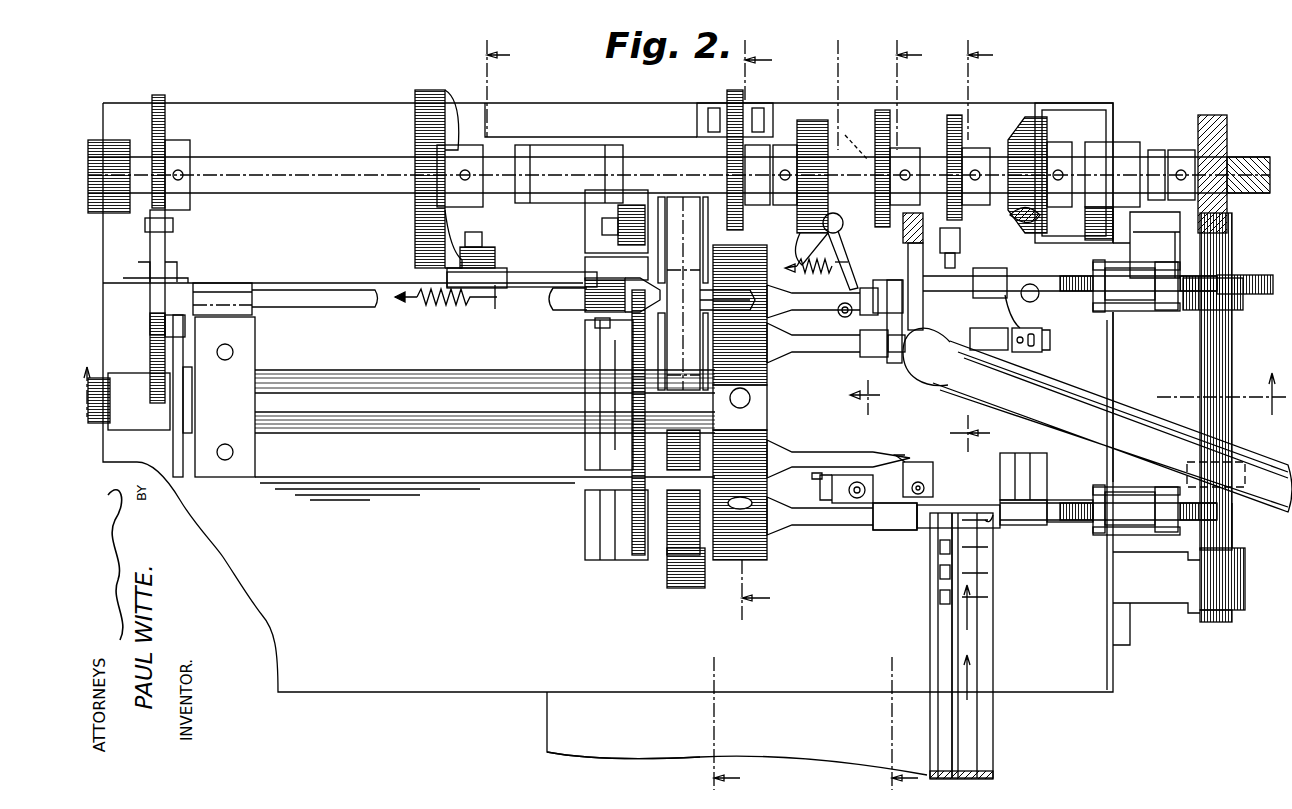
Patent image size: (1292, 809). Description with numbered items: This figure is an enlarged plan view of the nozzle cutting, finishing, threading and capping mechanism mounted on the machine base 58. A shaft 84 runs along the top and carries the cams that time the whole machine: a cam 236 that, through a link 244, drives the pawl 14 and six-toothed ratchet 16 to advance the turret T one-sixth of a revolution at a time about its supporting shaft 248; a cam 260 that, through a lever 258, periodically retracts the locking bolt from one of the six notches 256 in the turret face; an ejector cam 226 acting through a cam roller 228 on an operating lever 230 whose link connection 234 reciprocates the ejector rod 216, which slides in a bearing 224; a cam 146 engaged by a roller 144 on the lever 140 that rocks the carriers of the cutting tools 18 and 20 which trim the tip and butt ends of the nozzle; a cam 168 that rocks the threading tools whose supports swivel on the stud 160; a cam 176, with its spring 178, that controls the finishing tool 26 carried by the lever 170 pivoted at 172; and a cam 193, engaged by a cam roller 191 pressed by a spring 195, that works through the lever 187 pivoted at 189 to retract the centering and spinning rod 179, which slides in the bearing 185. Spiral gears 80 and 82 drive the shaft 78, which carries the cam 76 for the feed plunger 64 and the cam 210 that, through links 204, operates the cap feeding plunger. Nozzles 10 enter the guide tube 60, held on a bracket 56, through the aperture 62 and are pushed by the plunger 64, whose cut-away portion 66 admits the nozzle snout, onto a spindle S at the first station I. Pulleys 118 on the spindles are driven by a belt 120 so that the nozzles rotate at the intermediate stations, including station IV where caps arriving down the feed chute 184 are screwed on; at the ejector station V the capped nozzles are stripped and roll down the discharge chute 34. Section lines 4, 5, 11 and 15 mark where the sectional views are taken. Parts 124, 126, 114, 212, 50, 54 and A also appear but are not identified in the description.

The machine base 58 is at (651, 439).
The shaft 84 is at (292, 157).
The cam 236 is at (158, 95).
The ejector cam 226 is at (420, 92).
The cam 260 is at (735, 160).
The lever 258 is at (727, 90).
The cam 176 is at (812, 120).
The cam 146 is at (882, 110).
The roller 144 is at (859, 136).
The cam 168 is at (952, 115).
The feed chute 184 is at (930, 213).
The cam 193 is at (1018, 125).
The spiral gear 82 is at (1208, 115).
The spiral gear 80 is at (1245, 157).
The link 244 is at (163, 240).
The bearing 224 is at (222, 283).
The reciprocating rod 216 is at (320, 307).
The operating lever 230 is at (478, 300).
The cam roller 228 is at (495, 255).
The link connection 234 is at (555, 266).
The pawl 14 is at (150, 345).
The ratchet 16 is at (172, 430).
The shaft 248 is at (400, 433).
The flange 124 is at (668, 215).
The gear 126 is at (676, 357).
The pulleys 118 is at (700, 520).
The turret T is at (768, 396).
The notches 256 is at (730, 398).
The belt 120 is at (690, 588).
The ejector station V is at (812, 345).
The first operating station I is at (830, 478).
The spindles S is at (852, 535).
The cutting tool 18 is at (933, 478).
The cutting tool 20 is at (832, 485).
The cut-away portion 66 is at (897, 530).
The spring 178 is at (800, 262).
The knob 114 is at (851, 217).
The lever 140 is at (850, 258).
The station IV is at (840, 280).
The lever 170 is at (840, 263).
The pivot 172 is at (838, 310).
The bracket 212 is at (895, 363).
The nozzle 10 is at (925, 380).
The discharge chute 34 is at (1112, 426).
The centering and spinning rod 179 is at (990, 350).
The bearing 185 is at (998, 350).
The lever 187 is at (1048, 345).
The pivot 189 is at (1035, 318).
The spring 195 is at (1085, 300).
The cam roller 191 is at (1012, 222).
The stud 160 is at (960, 245).
The links 204 is at (1158, 312).
The cam 210 is at (1265, 294).
The cam 76 is at (1225, 508).
The feed plunger 64 is at (1078, 522).
The shaft 78 is at (1200, 365).
The bracket 56 is at (1008, 453).
The guide tube 60 is at (1000, 505).
The aperture 62 is at (985, 522).
The tube 50 is at (993, 612).
The tube 54 is at (993, 648).
The base A is at (669, 739).
The section line 4— 4 is at (599, 415).
The finishing tool 26 is at (738, 330).
The section line 11— 11 is at (890, 415).
The section line 15— 15 is at (959, 247).
The section line 5— 5 is at (684, 380).